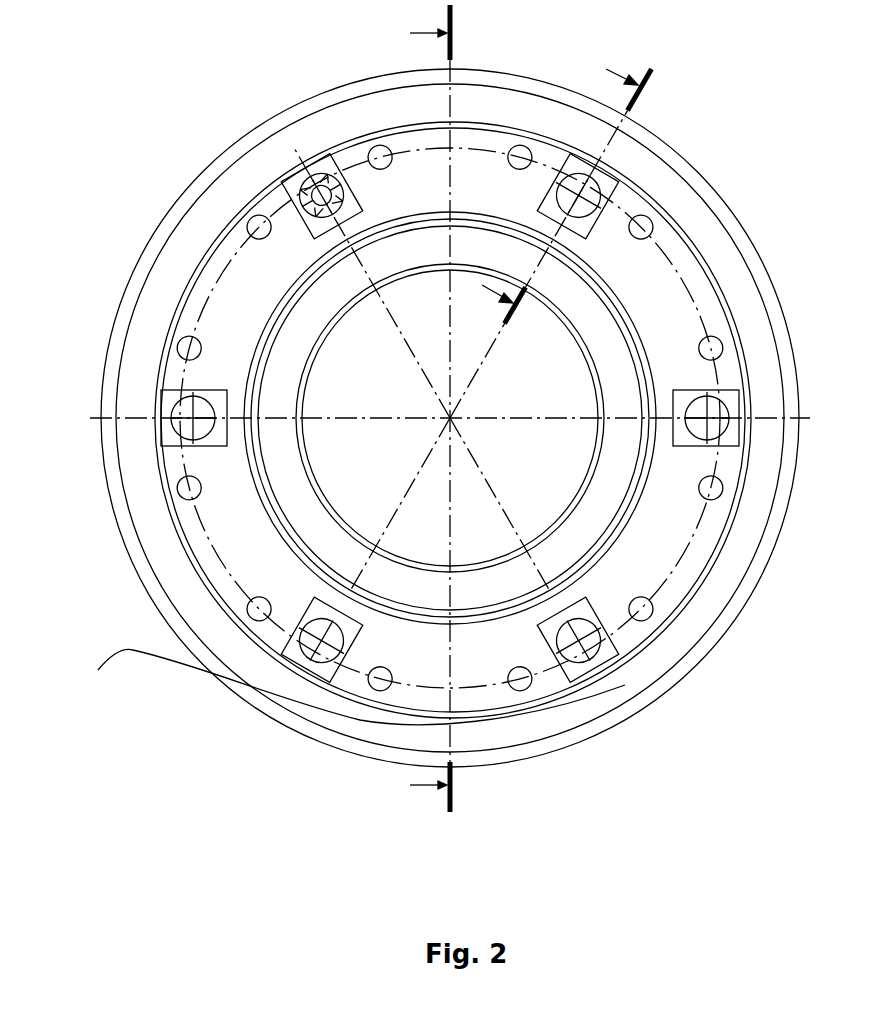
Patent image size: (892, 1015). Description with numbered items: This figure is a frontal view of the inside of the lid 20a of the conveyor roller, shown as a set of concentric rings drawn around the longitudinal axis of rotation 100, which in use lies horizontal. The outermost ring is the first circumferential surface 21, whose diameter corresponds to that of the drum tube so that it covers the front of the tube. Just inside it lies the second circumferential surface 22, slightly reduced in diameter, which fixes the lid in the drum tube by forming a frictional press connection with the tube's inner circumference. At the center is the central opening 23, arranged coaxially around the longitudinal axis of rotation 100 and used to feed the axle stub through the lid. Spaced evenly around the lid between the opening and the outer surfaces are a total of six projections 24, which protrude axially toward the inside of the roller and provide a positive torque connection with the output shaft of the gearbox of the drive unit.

The longitudinal axis of rotation 100 is at (458, 426).
The lid 20a is at (208, 830).
The first circumferential surface 21 is at (734, 192).
The second circumferential surface 22 is at (775, 268).
The central opening 23 is at (396, 406).
The projections 24 is at (168, 438).